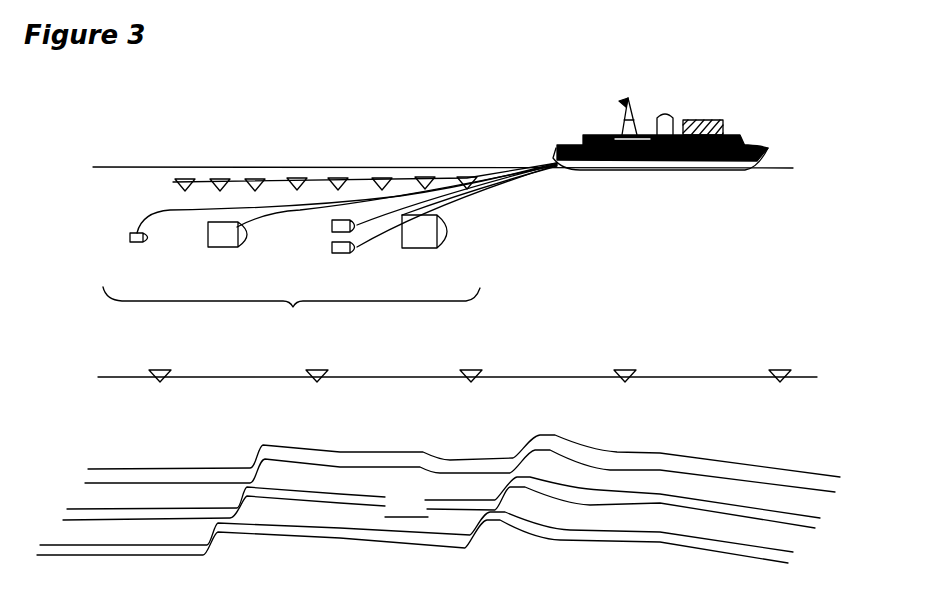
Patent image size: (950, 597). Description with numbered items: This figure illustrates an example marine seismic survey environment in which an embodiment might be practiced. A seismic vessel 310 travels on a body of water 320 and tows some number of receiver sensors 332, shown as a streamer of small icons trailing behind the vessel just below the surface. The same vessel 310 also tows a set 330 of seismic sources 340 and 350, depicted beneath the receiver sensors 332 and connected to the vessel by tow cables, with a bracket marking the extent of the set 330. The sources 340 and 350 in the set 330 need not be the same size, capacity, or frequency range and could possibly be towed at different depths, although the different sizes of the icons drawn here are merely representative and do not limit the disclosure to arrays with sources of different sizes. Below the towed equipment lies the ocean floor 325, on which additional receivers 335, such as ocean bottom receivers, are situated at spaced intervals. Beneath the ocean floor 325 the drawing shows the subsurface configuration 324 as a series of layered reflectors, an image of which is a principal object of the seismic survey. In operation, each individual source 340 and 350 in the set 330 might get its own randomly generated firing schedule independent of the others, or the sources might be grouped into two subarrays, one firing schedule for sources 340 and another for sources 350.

The seismic vessel 310 is at (727, 125).
The body of water 320 is at (127, 166).
The receiver sensors 332 is at (338, 176).
The seismic sources 350 is at (133, 233).
The seismic sources 340 is at (328, 249).
The set of seismic sources 330 is at (291, 314).
The ocean floor 325 is at (107, 375).
The additional receivers 335 is at (160, 382).
The subsurface configuration 324 is at (438, 499).